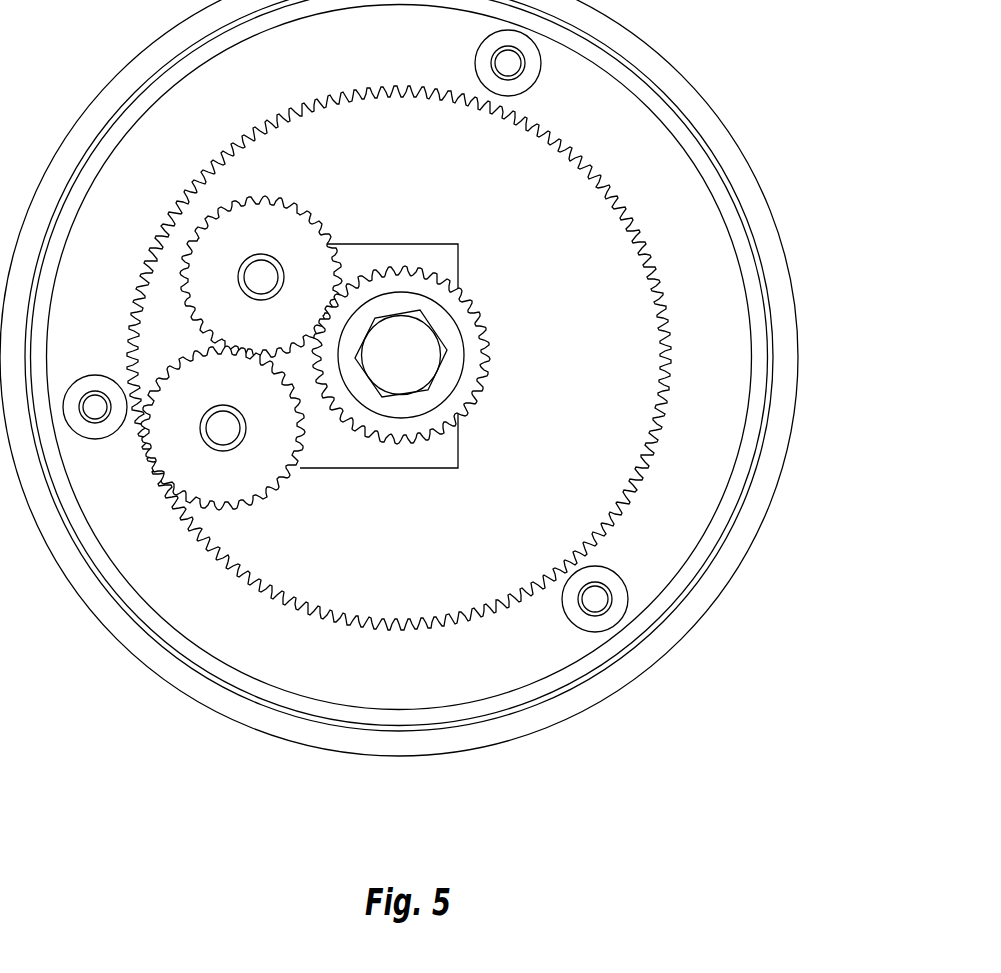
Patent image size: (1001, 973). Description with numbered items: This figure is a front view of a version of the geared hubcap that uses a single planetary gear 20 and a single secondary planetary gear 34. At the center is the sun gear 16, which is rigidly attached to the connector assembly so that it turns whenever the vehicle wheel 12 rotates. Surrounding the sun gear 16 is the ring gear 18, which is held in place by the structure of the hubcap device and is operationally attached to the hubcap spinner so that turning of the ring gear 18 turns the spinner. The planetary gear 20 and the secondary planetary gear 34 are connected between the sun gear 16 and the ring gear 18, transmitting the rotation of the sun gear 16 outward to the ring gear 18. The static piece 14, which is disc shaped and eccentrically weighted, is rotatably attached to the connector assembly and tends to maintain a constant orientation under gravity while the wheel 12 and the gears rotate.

The vehicle wheel 12 is at (738, 528).
The static piece 14 is at (368, 453).
The sun gear 16 is at (467, 373).
The ring gear 18 is at (658, 290).
The planetary gear 20 is at (277, 240).
The secondary planetary gear 34 is at (248, 458).